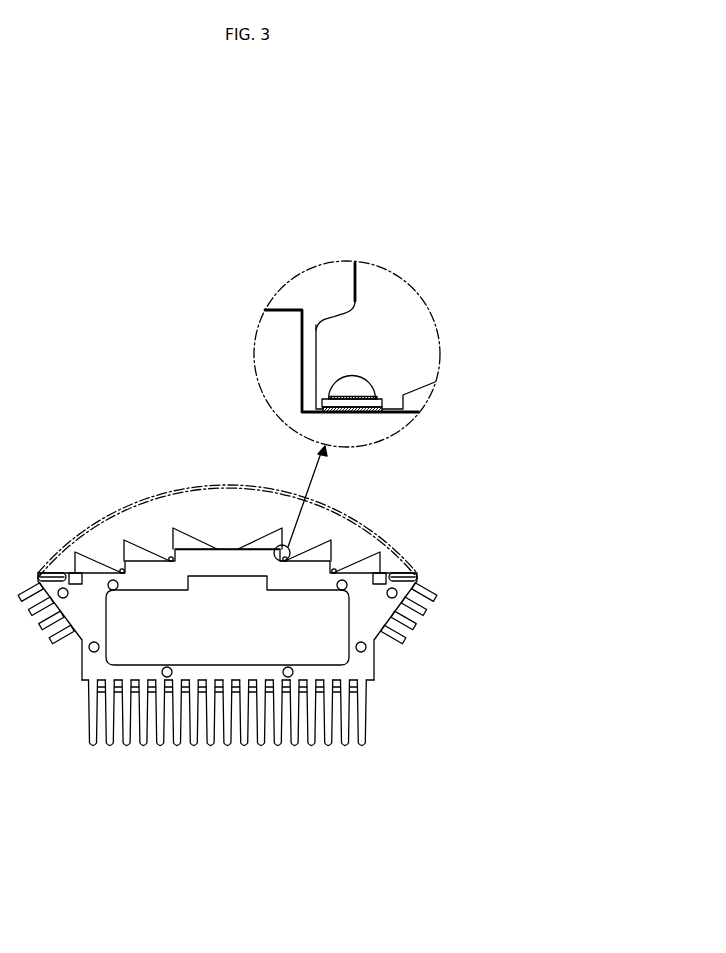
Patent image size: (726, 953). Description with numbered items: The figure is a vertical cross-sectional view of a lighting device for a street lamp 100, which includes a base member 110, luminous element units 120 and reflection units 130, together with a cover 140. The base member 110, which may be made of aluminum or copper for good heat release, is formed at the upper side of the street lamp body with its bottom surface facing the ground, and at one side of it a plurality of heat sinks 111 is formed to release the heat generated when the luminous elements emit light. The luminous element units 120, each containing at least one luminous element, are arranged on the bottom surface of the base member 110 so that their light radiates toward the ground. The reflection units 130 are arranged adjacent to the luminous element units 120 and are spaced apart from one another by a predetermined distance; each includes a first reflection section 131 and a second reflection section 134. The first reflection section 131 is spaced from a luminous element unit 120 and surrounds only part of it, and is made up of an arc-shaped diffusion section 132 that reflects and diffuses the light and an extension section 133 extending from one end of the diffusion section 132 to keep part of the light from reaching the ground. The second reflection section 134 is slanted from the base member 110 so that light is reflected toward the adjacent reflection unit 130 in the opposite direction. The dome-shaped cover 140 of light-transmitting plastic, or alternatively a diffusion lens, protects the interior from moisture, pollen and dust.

The lighting device for a street lamp 100 is at (50, 424).
The base member 110 is at (375, 668).
The heat sink 111 is at (427, 612).
The luminous element unit 120 is at (331, 565).
The reflection unit 130 is at (218, 447).
The first reflection section 131 is at (170, 548).
The diffusion section 132 is at (322, 328).
The extension section 133 is at (350, 308).
The second reflection section 134 is at (186, 548).
The cover 140 is at (104, 516).